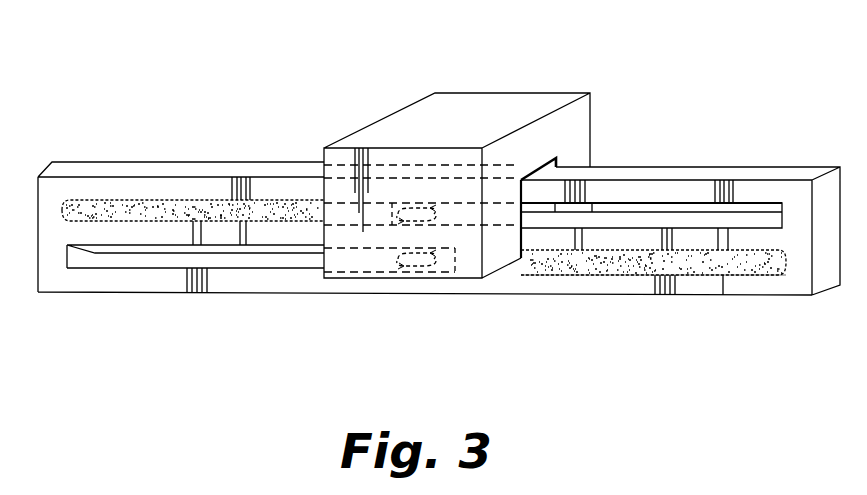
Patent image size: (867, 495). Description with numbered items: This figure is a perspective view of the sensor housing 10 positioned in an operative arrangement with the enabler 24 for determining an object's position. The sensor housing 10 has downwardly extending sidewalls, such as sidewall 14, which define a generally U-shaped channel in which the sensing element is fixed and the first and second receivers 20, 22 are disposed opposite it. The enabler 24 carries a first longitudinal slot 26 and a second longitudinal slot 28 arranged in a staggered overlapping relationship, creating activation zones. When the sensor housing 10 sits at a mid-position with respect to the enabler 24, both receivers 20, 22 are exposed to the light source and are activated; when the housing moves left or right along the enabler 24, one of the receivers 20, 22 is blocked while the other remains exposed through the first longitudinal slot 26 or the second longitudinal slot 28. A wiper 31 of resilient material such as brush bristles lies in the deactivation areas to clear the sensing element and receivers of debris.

The sensor housing 10 is at (535, 108).
The sidewall 14 is at (468, 265).
The first receiver 20 is at (418, 200).
The second receiver 22 is at (423, 281).
The enabler 24 is at (700, 283).
The first longitudinal slot 26 is at (680, 207).
The second longitudinal slot 28 is at (160, 262).
The wiper 31 is at (150, 212).